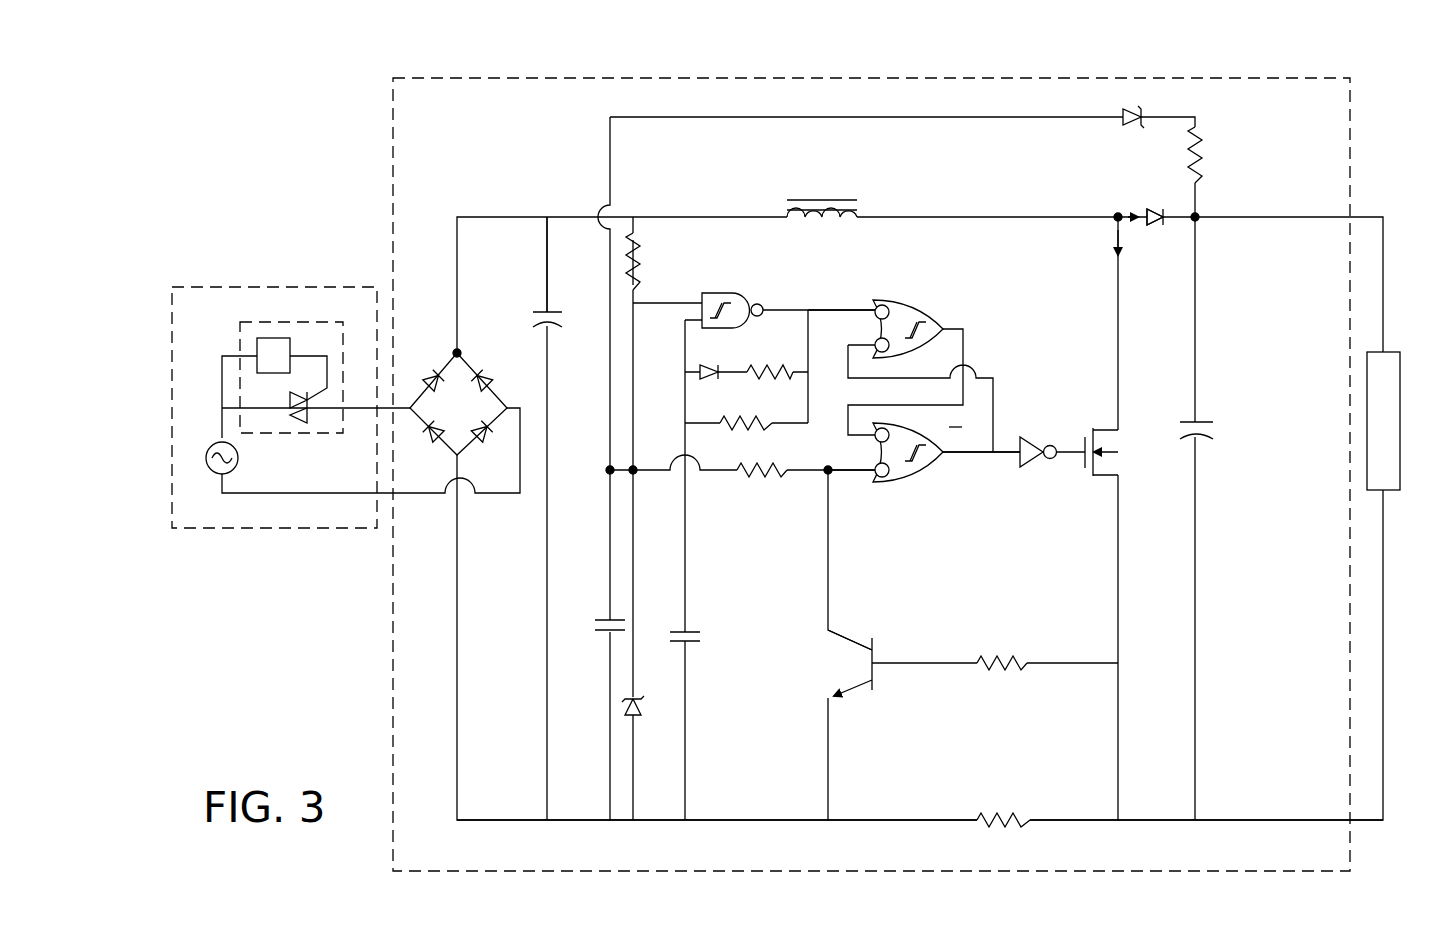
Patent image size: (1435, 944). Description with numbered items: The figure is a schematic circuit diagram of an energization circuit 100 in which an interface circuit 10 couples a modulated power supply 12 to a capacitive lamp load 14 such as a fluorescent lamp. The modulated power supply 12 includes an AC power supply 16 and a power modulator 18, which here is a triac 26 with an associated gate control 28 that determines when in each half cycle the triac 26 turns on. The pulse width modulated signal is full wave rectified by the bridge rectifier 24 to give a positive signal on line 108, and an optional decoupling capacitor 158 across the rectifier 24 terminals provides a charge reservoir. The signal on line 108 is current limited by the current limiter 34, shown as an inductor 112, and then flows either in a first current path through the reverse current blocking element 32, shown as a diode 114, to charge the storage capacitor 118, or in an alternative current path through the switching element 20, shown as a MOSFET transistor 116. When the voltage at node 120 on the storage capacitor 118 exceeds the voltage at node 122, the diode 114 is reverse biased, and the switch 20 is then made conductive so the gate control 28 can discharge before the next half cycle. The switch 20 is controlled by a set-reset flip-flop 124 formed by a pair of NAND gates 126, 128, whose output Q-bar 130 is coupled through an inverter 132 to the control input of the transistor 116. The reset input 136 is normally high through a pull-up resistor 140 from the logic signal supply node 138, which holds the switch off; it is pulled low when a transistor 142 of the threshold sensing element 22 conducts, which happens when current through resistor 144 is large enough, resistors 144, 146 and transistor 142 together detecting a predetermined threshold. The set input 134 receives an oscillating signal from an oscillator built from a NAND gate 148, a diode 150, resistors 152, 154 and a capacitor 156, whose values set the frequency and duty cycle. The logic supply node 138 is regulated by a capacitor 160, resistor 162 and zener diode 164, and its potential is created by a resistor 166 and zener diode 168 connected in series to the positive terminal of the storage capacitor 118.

The energization circuit 100 is at (327, 74).
The interface circuit 10 is at (393, 166).
The modulated power supply 12 is at (180, 287).
The power modulator 18 is at (342, 322).
The gate control 28 is at (275, 338).
The AC power supply 16 is at (250, 456).
The triac 26 is at (310, 410).
The bridge rectifier 24 is at (500, 360).
The line 108 is at (533, 215).
The decoupling capacitor 158 is at (563, 313).
The resistor 162 is at (640, 232).
The reverse current blocking element 32 is at (677, 290).
The NAND gate 148 is at (715, 293).
The diode 150 is at (700, 372).
The resistor 152 is at (748, 372).
The resistor 154 is at (745, 422).
The logic signal supply node 138 is at (607, 470).
The capacitor 160 is at (595, 621).
The pull-up resistor 140 is at (782, 476).
The capacitor 156 is at (700, 633).
The zener diode 164 is at (641, 702).
The transistor 142 is at (870, 663).
The resistor 146 is at (1000, 660).
The resistor 144 is at (1005, 815).
The threshold sensing element 22 is at (994, 860).
The inductor 112 is at (817, 200).
The current limiter 34 is at (770, 196).
The set input 134 is at (840, 311).
The diode 114 is at (925, 300).
The set-reset flip-flop 124 is at (905, 292).
The NAND gate 128 is at (910, 482).
The output Q-bar 130 is at (980, 455).
The reset input 136 is at (855, 472).
The node 120 is at (832, 472).
The inverter 132 is at (1035, 440).
The MOSFET transistor 116 is at (1121, 457).
The switching element 20 is at (1091, 494).
The NAND gate 126 is at (1148, 210).
The node 122 is at (1115, 218).
The zener diode 168 is at (1142, 112).
The resistor 166 is at (1205, 158).
The storage capacitor 118 is at (1214, 425).
The capacitive lamp load 14 is at (1400, 352).